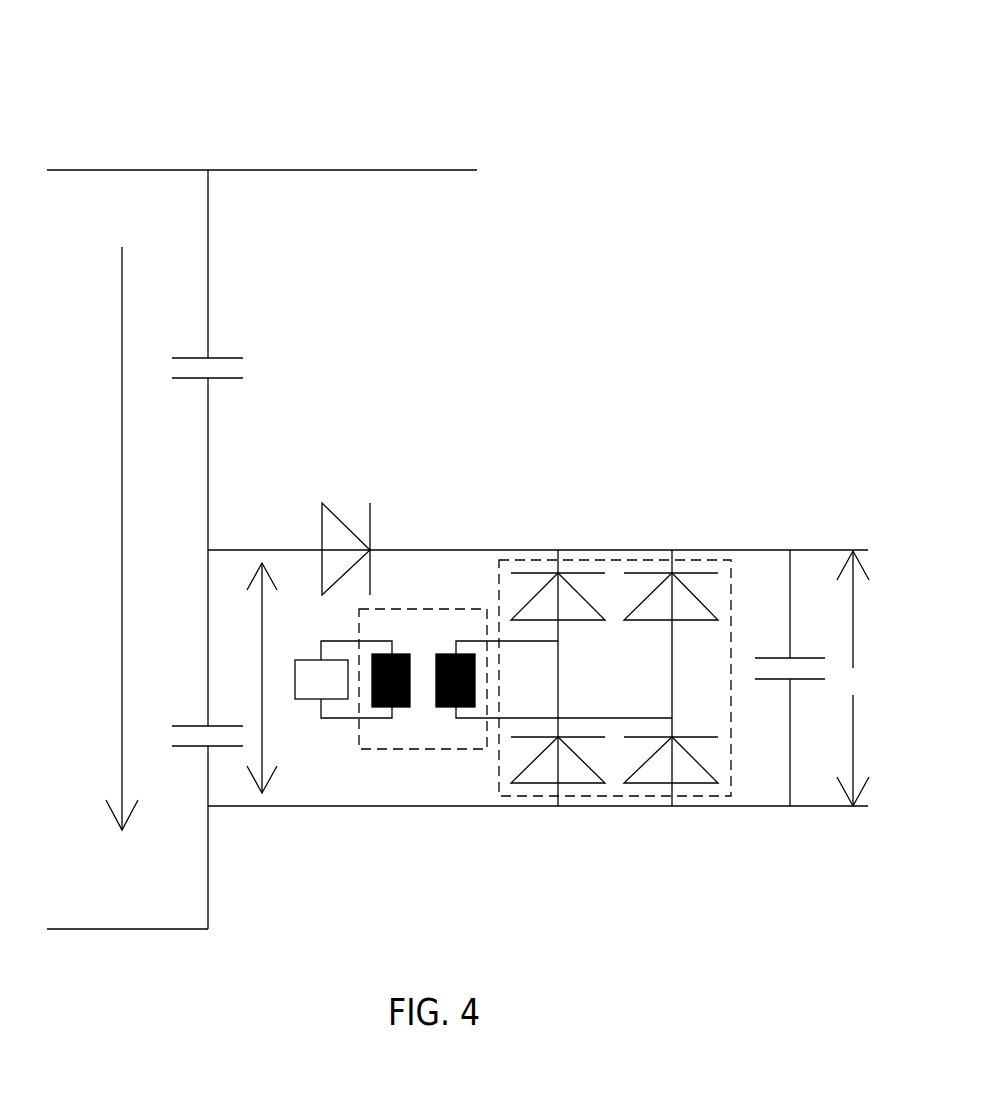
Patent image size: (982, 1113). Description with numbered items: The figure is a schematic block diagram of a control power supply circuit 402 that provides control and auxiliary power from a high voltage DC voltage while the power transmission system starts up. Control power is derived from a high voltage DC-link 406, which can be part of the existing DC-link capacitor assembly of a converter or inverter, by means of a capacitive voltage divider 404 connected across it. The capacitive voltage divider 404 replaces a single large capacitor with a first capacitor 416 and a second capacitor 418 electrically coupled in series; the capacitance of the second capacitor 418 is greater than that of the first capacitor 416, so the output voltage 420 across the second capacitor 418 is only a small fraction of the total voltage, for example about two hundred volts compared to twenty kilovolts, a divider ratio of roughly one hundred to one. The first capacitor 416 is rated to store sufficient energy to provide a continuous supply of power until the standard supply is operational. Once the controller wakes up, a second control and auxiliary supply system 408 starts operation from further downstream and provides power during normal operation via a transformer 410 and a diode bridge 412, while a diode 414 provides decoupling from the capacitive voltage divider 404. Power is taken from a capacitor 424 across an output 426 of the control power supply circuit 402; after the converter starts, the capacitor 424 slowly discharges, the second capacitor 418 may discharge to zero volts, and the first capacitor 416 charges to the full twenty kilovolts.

The control power supply circuit 402 is at (518, 70).
The capacitive voltage divider 404 is at (286, 410).
The high voltage DC-link 406 is at (166, 126).
The second control and auxiliary supply system 408 is at (343, 679).
The transformer 410 is at (385, 606).
The diode bridge 412 is at (636, 550).
The diode 414 is at (334, 510).
The first capacitor 416 is at (230, 358).
The second capacitor 418 is at (193, 726).
The output voltage 420 is at (229, 550).
The capacitor 424 is at (812, 658).
The output 426 is at (854, 678).